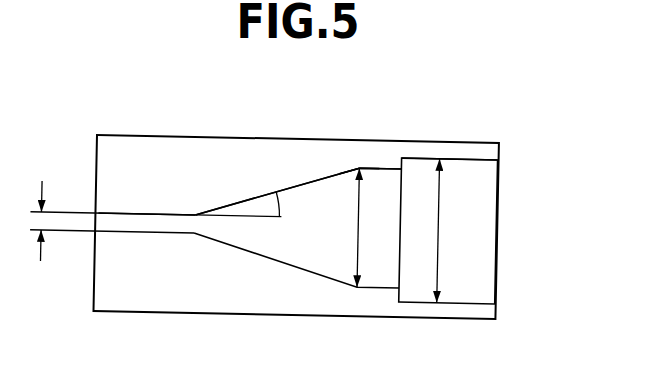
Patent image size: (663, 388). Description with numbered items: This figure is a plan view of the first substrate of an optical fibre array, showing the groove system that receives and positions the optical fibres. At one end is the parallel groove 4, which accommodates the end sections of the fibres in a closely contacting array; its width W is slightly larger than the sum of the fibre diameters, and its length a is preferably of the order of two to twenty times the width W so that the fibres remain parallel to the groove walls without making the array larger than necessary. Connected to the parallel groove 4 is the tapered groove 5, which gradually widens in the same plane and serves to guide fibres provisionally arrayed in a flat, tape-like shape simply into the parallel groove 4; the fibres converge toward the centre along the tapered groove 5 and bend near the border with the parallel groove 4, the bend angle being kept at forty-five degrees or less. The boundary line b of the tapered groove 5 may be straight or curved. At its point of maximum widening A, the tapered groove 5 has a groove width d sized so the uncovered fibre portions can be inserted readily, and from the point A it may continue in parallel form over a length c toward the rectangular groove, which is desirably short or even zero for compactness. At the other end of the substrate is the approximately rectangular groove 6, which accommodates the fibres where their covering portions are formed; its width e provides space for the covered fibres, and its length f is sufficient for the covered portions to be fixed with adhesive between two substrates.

The parallel groove 4 is at (140, 222).
The tapered groove 5 is at (315, 246).
The approximately rectangular groove 6 is at (475, 220).
The length of the parallel groove a is at (144, 209).
The boundary line of the tapered groove b is at (239, 194).
The point of maximum widening A is at (360, 158).
The parallel extension length c is at (384, 160).
The length of the rectangular groove f is at (455, 150).
The width of the parallel groove W is at (42, 207).
The groove width of the tapered groove d is at (348, 227).
The width of the rectangular groove e is at (428, 230).